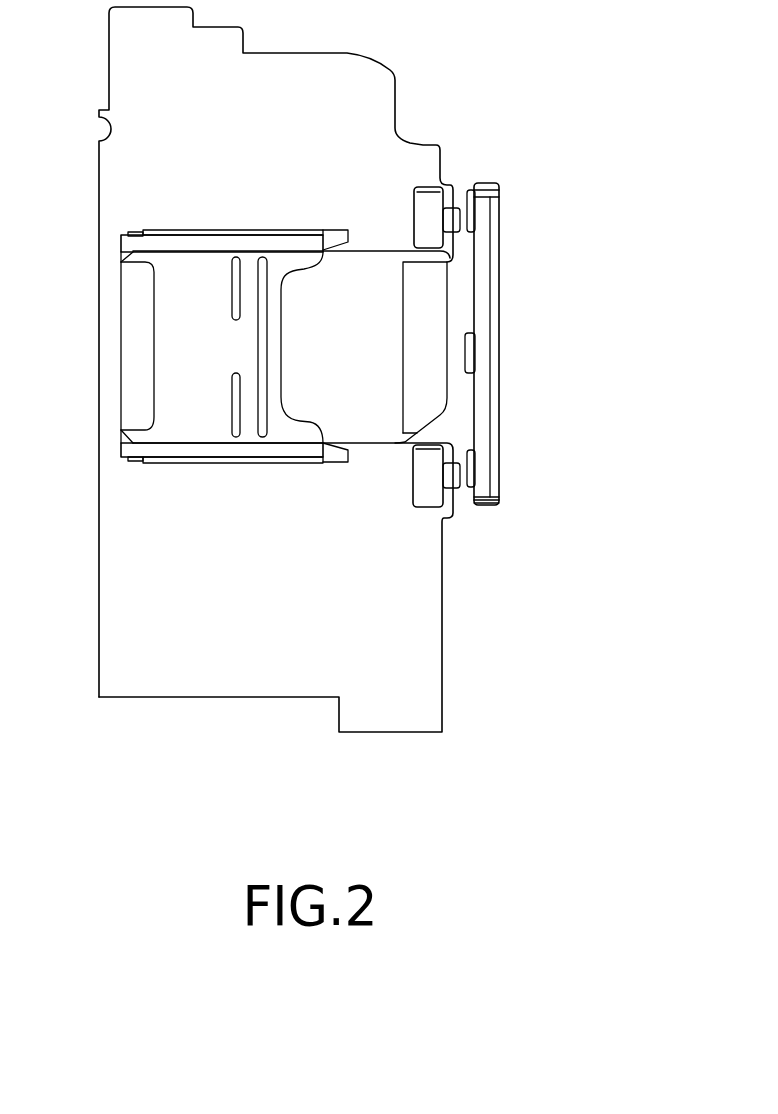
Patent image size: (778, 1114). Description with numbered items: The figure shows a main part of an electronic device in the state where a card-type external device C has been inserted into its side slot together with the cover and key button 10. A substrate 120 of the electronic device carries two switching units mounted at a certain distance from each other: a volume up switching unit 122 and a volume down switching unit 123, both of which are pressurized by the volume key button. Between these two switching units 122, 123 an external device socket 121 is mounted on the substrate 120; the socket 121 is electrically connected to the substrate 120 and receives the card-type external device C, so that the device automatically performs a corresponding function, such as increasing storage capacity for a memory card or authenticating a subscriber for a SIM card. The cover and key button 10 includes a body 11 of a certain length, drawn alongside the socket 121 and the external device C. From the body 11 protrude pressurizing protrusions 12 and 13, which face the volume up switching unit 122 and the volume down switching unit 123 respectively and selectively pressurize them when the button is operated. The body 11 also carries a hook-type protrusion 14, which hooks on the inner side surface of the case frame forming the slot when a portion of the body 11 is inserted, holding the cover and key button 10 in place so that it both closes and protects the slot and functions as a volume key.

The cover and key button 10 is at (500, 408).
The body 11 is at (492, 235).
The pressurizing protrusion 12 is at (470, 190).
The pressurizing protrusion 13 is at (464, 489).
The hook-type protrusion 14 is at (466, 347).
The external device C is at (432, 298).
The substrate 120 is at (423, 639).
The external device socket 121 is at (172, 437).
The volume up switching unit 122 is at (431, 200).
The volume down switching unit 123 is at (430, 498).